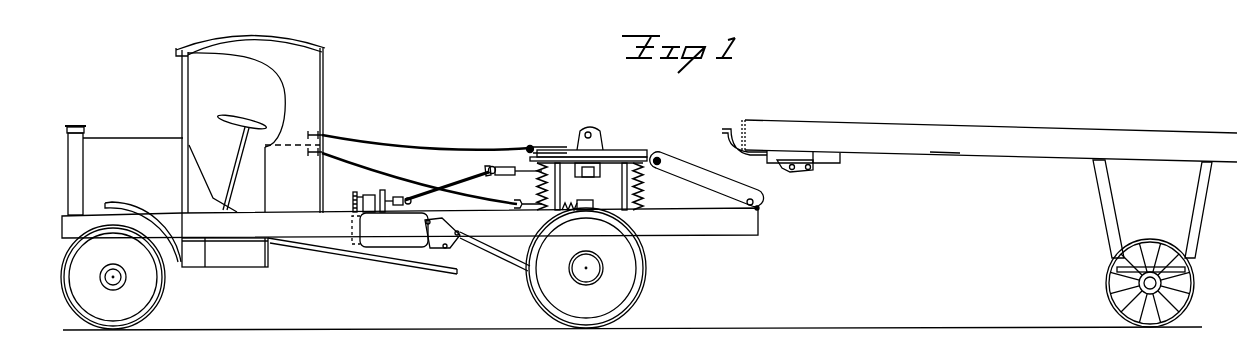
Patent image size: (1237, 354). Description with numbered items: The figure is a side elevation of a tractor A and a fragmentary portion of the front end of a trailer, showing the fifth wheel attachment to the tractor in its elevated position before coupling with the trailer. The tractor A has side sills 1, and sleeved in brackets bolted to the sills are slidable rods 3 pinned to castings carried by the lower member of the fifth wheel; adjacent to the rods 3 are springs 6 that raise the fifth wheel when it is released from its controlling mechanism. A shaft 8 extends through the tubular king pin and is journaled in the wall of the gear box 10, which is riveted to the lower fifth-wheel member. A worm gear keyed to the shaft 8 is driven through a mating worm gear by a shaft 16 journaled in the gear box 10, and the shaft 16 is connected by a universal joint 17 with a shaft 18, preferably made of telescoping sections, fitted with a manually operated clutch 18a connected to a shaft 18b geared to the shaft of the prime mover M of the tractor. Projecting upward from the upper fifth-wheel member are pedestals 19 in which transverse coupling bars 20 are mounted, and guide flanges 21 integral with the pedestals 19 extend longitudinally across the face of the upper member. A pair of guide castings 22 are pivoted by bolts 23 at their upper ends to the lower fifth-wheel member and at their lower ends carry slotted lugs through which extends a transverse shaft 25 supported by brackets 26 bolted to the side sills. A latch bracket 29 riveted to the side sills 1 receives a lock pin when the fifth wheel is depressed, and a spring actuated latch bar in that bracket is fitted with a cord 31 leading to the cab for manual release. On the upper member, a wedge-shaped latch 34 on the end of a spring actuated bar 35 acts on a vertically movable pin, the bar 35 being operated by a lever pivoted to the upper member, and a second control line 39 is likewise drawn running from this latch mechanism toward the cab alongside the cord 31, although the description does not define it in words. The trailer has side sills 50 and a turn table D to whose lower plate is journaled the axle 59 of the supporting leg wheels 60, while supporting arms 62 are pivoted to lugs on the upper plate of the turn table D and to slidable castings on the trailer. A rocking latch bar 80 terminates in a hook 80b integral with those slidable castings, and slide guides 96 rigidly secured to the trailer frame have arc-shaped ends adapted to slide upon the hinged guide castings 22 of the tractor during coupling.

The side sills 1 is at (410, 223).
The slidable rods 3 is at (561, 188).
The springs 6 is at (537, 186).
The shaft 8 is at (644, 186).
The gear box 10 is at (587, 176).
The shaft 16 is at (520, 172).
The universal joint 17 is at (497, 179).
The shaft 18 is at (466, 182).
The manually operated clutch 18a is at (394, 195).
The shaft 18b is at (361, 192).
The pedestals 19 is at (601, 142).
The transverse coupling bars 20 is at (593, 134).
The guide flanges 21 is at (632, 152).
The guide castings 22 is at (697, 175).
The bolts 23 is at (662, 165).
The transverse shaft 25 is at (746, 203).
The brackets 26 is at (758, 209).
The latch bracket 29 is at (594, 205).
The cord 31 is at (432, 182).
The wedge-shaped latch 34 is at (531, 147).
The spring actuated bar 35 is at (550, 144).
The control rod 39 is at (426, 142).
The side sills 50 is at (946, 152).
The axle 59 is at (1140, 284).
The supporting leg wheels 60 is at (1195, 289).
The supporting arms 62 is at (1098, 214).
The rocking latch bar 80 is at (811, 168).
The hook 80b is at (790, 173).
The slide guides 96 is at (726, 130).
The tractor A is at (353, 182).
The boom C is at (989, 136).
The turn table D is at (1152, 270).
The prime mover M is at (397, 241).